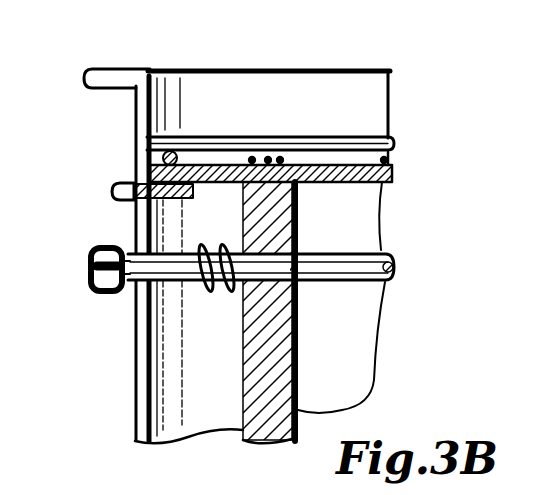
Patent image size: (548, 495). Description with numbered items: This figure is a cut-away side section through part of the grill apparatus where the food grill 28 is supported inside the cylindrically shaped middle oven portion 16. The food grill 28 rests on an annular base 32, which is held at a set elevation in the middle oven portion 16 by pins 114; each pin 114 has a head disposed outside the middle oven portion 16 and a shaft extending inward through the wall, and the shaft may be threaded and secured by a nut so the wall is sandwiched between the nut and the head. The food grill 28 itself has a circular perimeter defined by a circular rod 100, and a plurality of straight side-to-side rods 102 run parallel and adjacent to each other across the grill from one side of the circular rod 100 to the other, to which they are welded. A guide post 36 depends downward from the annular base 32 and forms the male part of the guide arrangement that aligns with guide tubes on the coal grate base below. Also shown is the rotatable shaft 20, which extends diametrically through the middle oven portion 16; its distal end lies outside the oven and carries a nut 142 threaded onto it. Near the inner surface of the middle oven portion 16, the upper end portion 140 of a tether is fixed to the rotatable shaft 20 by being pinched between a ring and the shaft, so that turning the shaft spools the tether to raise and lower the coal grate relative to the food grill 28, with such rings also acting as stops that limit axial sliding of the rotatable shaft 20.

The middle oven portion 16 is at (140, 385).
The rotatable shaft 20 is at (357, 253).
The food grill 28 is at (343, 136).
The annular base 32 is at (357, 183).
The guide post 36 is at (300, 332).
The circular rod 100 is at (133, 160).
The straight side-to-side rod 102 is at (197, 134).
The pin 114 is at (112, 187).
The upper end portion 140 is at (213, 294).
The nut 142 is at (84, 265).